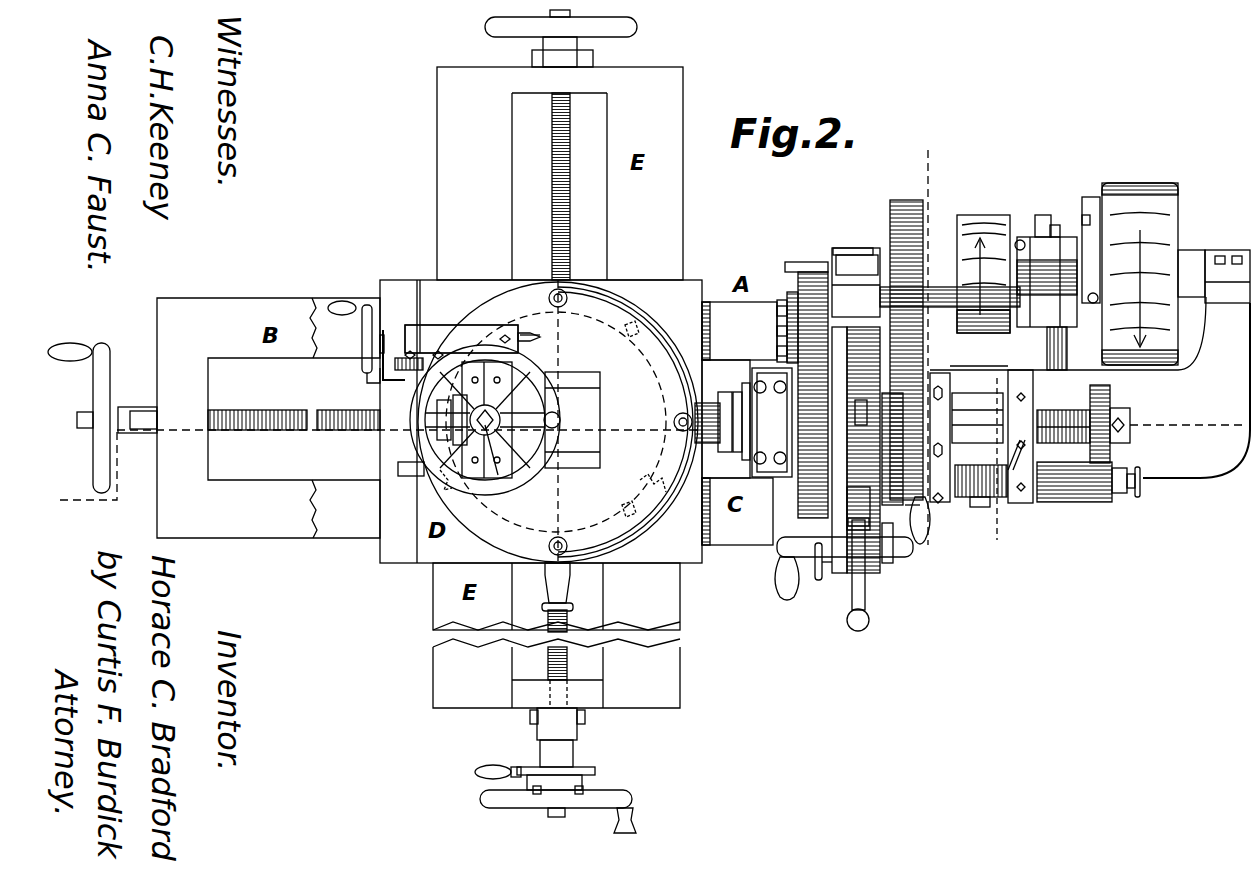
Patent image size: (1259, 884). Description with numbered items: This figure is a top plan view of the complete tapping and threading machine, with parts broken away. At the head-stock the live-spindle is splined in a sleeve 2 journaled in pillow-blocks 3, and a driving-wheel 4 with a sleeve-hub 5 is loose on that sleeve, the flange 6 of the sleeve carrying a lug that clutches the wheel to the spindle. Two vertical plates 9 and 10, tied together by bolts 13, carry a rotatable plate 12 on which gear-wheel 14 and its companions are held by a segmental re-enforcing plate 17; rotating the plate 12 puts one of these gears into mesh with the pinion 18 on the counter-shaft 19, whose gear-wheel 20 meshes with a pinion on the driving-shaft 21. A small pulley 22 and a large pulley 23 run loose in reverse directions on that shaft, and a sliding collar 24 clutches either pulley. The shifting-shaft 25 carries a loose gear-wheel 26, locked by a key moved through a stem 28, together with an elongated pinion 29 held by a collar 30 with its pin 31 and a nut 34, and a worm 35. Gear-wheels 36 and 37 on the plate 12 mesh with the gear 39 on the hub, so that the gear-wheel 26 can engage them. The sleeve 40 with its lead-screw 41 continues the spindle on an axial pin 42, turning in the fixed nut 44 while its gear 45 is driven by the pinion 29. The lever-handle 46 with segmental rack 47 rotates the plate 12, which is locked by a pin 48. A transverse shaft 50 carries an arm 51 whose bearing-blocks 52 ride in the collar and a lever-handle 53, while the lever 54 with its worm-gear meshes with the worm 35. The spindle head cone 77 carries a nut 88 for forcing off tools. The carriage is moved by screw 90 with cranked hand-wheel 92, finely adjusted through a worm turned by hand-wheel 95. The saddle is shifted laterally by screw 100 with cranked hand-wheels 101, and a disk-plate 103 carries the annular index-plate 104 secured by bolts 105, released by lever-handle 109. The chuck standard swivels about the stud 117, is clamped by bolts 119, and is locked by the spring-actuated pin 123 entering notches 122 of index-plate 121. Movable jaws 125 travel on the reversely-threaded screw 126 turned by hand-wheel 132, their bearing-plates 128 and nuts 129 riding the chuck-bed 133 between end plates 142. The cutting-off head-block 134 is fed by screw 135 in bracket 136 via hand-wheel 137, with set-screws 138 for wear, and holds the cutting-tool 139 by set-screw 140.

The sleeve 2 is at (738, 435).
The pillow-blocks 3 is at (742, 390).
The driving-wheel 4 is at (798, 398).
The sleeve-hub 5 is at (959, 350).
The flange 6 is at (798, 424).
The vertical plate 9 is at (887, 445).
The vertical plate 10 is at (840, 450).
The plate 12 is at (863, 450).
The bolts 13 is at (893, 545).
The gear-wheel 14 is at (777, 322).
The segmental re-enforcing plate 17 is at (790, 300).
The pinion 18 is at (808, 272).
The counter-shaft 19 is at (948, 305).
The gear-wheel 20 is at (906, 212).
The driving-shaft 21 is at (785, 267).
The small pulley 22 is at (983, 274).
The large pulley 23 is at (1153, 274).
The sliding collar 24 is at (1042, 215).
The shifting-shaft 25 is at (1010, 505).
The gear-wheel 26 is at (920, 530).
The stem 28 is at (1139, 475).
The elongated pinion 29 is at (1090, 502).
The collar 30 is at (1118, 493).
The pin 31 is at (977, 412).
The nut 34 is at (1131, 488).
The worm 35 is at (965, 497).
The gear-wheel 36 is at (860, 403).
The gear-wheel 37 is at (943, 504).
The gear 39 is at (940, 378).
The sleeve 40 is at (1075, 443).
The lead-screw 41 is at (1068, 415).
The axial pin 42 is at (1130, 425).
The fixed nut 44 is at (1033, 405).
The gear 45 is at (1105, 400).
The lever-handle 46 is at (865, 598).
The segmental rack 47 is at (858, 487).
The pin 48 is at (826, 575).
The transverse shaft 50 is at (1067, 345).
The arm 51 is at (1040, 237).
The bearing-blocks 52 is at (1056, 228).
The lever-handle 53 is at (928, 522).
The lever 54 is at (995, 520).
The cone 77 is at (705, 425).
The nut 88 is at (725, 452).
The screw 90 is at (283, 412).
The cranked hand-wheel 92 is at (110, 368).
The cranked hand-wheel 95 is at (785, 548).
The screw 100 is at (552, 190).
The cranked hand-wheels 101 is at (637, 28).
The disk-plate 103 is at (585, 780).
The annular index-plate 104 is at (582, 767).
The bolts 105 is at (535, 794).
The lever-handle 109 is at (496, 765).
The stud 117 is at (490, 480).
The bolts 119 is at (567, 300).
The annular index-plate 121 is at (655, 489).
The notches 122 is at (634, 425).
The spring-actuated pin 123 is at (570, 598).
The movable jaws 125 is at (573, 420).
The reversely-threaded screw 126 is at (461, 338).
The bearing-plates 128 is at (418, 477).
The nuts 129 is at (440, 432).
The cranked hand-wheel 132 is at (500, 478).
The chuck-bed 133 is at (490, 412).
The head-block 134 is at (462, 325).
The screw 135 is at (385, 332).
The bracket 136 is at (378, 383).
The cranked hand-wheel 137 is at (362, 335).
The set-screws 138 is at (440, 350).
The cutting-tool 139 is at (540, 337).
The set-screw 140 is at (505, 338).
The plates 142 is at (450, 490).